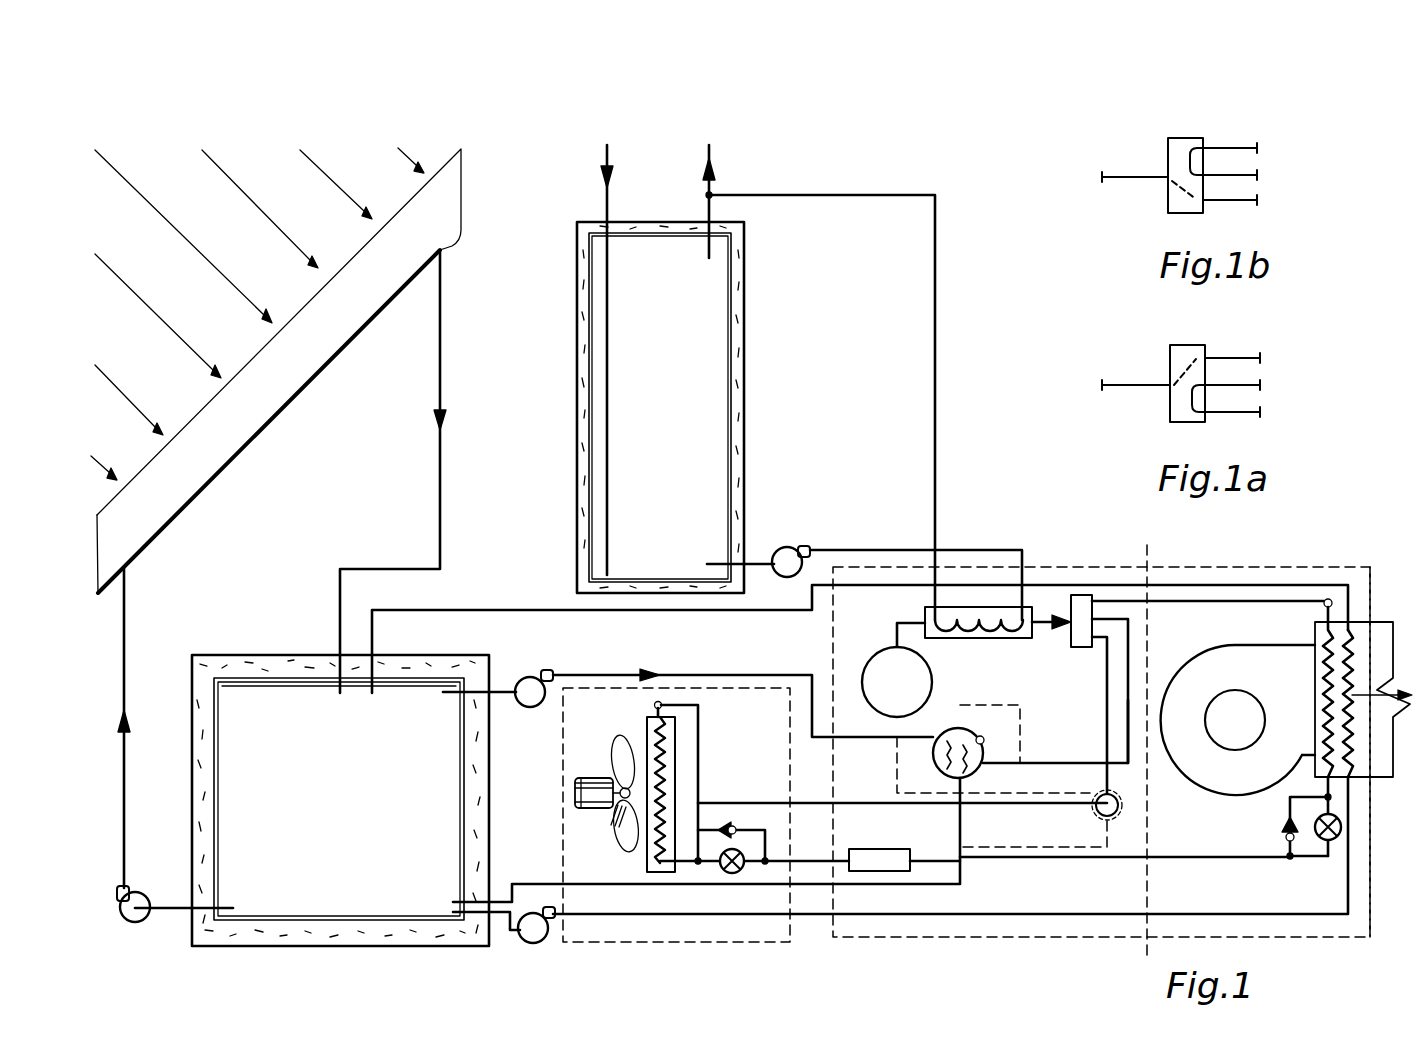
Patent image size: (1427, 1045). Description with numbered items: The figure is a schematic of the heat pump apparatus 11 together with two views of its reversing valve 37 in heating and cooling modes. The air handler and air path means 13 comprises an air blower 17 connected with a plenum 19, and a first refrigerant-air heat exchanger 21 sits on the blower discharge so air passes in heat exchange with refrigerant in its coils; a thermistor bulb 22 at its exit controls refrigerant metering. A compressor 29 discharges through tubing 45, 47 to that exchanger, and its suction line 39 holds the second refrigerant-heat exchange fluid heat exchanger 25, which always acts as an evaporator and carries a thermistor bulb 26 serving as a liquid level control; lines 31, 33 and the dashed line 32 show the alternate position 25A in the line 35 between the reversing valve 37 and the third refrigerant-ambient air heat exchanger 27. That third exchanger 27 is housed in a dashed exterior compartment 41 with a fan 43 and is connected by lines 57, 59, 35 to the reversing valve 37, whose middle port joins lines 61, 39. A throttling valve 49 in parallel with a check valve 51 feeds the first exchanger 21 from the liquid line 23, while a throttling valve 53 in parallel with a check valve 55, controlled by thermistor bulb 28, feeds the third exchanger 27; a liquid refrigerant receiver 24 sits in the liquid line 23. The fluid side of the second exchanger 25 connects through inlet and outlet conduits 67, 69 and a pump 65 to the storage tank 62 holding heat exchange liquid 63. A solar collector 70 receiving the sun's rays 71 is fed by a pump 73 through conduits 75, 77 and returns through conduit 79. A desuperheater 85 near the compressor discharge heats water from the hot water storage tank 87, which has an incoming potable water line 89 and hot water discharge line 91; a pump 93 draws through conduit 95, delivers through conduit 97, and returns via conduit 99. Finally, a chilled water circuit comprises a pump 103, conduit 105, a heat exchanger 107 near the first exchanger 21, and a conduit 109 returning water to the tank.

In FIG. 1, the apparatus 11 is at (985, 556).
In FIG. 1, the air handler and air path means 13 is at (1379, 556).
In FIG. 1, the air blower 17 is at (1250, 645).
In FIG. 1, the plenum 19 is at (1385, 622).
In FIG. 1, the first refrigerant-air heat exchanger 21 is at (1326, 632).
In FIG. 1, the thermistor bulb 22 is at (1329, 599).
In FIG. 1, the liquid line 23 is at (1228, 857).
In FIG. 1, the liquid refrigerant receiver 24 is at (882, 849).
In FIG. 1, the second refrigerant-heat exchange fluid heat exchanger 25 is at (935, 743).
In FIG. 1, the alternate position of second heat exchanger 25A is at (1121, 809).
In FIG. 1, the thermistor bulb 26 is at (982, 738).
In FIG. 1, the third refrigerant-ambient air heat exchanger 27 is at (648, 722).
In FIG. 1, the thermistor bulb 28 is at (655, 702).
In FIG. 1, the compressor 29 is at (932, 673).
In FIG. 1, the line 31 is at (897, 774).
In FIG. 1, the dashed line 32 is at (1092, 813).
In FIG. 1, the line 33 is at (1031, 847).
In FIG. 1, the line 35 is at (1106, 689).
In FIG. 1A, the line 35 is at (1256, 416).
In FIG. 1B, the line 35 is at (1252, 206).
In FIG. 1, the reversing valve 37 is at (1070, 633).
In FIG. 1A, the reversing valve 37 is at (1170, 363).
In FIG. 1B, the reversing valve 37 is at (1168, 157).
In FIG. 1, the line 39 is at (1035, 762).
In FIG. 1, the compartment 41 is at (737, 935).
In FIG. 1, the fan 43 is at (621, 757).
In FIG. 1, the tubing 45 is at (896, 637).
In FIG. 1A, the tubing 45 is at (1148, 386).
In FIG. 1B, the tubing 45 is at (1140, 178).
In FIG. 1, the tubing 47 is at (1183, 603).
In FIG. 1A, the tubing 47 is at (1256, 363).
In FIG. 1B, the tubing 47 is at (1252, 155).
In FIG. 1, the throttling valve 49 is at (1335, 841).
In FIG. 1, the check valve 51 is at (1284, 829).
In FIG. 1, the throttling valve 53 is at (728, 875).
In FIG. 1, the check valve 55 is at (738, 827).
In FIG. 1, the line 57 is at (703, 723).
In FIG. 1, the line 59 is at (812, 803).
In FIG. 1, the line 61 is at (1130, 750).
In FIG. 1A, the line 61 is at (1256, 390).
In FIG. 1B, the line 61 is at (1252, 181).
In FIG. 1, the storage tank 62 is at (292, 657).
In FIG. 1, the heat exchange liquid 63 is at (248, 700).
In FIG. 1, the pump 65 is at (532, 678).
In FIG. 1, the inlet conduit 67 is at (668, 673).
In FIG. 1, the outlet conduit 69 is at (960, 872).
In FIG. 1, the solar collector 70 is at (291, 400).
In FIG. 1, the sun's rays 71 is at (157, 210).
In FIG. 1, the pump 73 is at (142, 896).
In FIG. 1, the conduit 75 is at (173, 912).
In FIG. 1, the conduit 77 is at (125, 617).
In FIG. 1, the return conduit 79 is at (443, 346).
In FIG. 1, the desuperheater 85 is at (925, 612).
In FIG. 1, the hot water storage tank 87 is at (746, 336).
In FIG. 1, the incoming potable water line 89 is at (605, 198).
In FIG. 1, the hot water discharge line 91 is at (712, 155).
In FIG. 1, the pump 93 is at (798, 552).
In FIG. 1, the conduit 95 is at (760, 561).
In FIG. 1, the conduit 97 is at (873, 550).
In FIG. 1, the conduit 99 is at (938, 334).
In FIG. 1, the pump 103 is at (532, 943).
In FIG. 1, the conduit 105 is at (1118, 908).
In FIG. 1, the heat exchanger 107 is at (1352, 757).
In FIG. 1, the conduit 109 is at (758, 611).